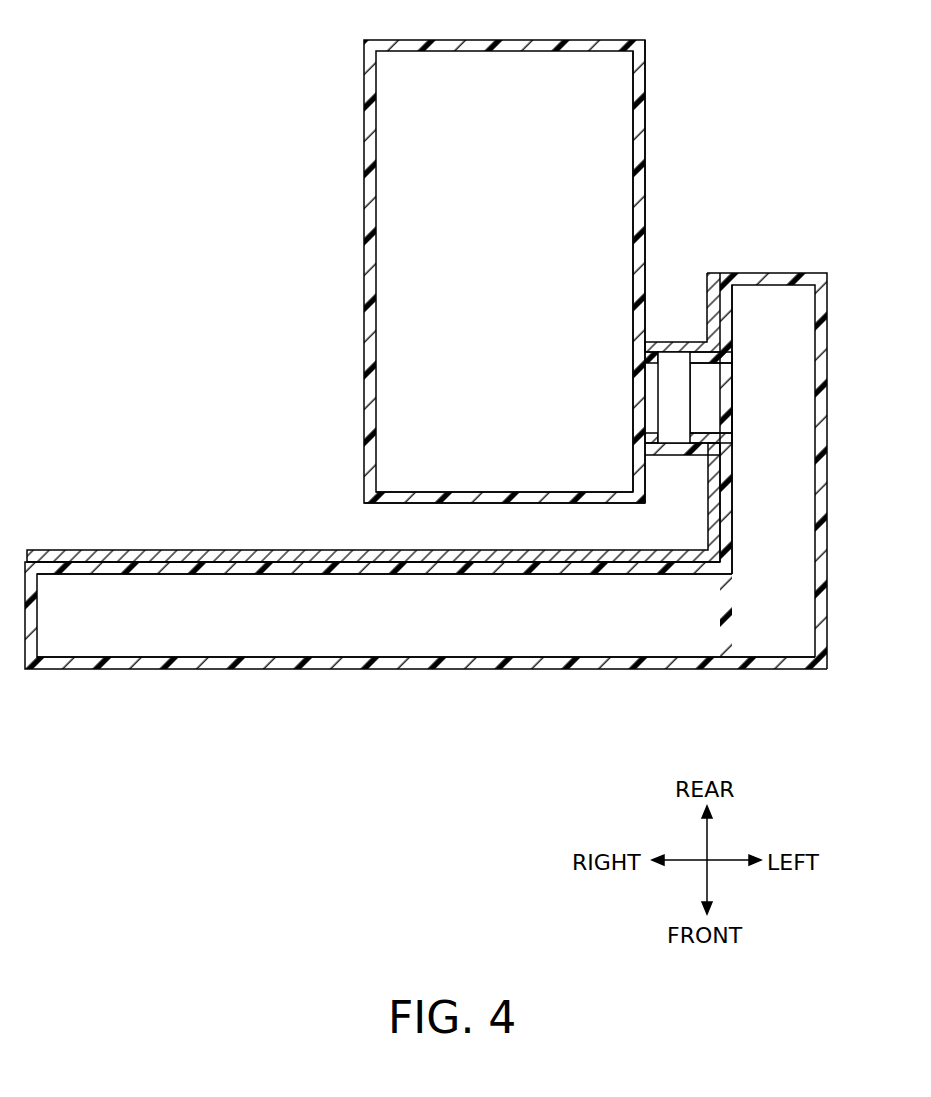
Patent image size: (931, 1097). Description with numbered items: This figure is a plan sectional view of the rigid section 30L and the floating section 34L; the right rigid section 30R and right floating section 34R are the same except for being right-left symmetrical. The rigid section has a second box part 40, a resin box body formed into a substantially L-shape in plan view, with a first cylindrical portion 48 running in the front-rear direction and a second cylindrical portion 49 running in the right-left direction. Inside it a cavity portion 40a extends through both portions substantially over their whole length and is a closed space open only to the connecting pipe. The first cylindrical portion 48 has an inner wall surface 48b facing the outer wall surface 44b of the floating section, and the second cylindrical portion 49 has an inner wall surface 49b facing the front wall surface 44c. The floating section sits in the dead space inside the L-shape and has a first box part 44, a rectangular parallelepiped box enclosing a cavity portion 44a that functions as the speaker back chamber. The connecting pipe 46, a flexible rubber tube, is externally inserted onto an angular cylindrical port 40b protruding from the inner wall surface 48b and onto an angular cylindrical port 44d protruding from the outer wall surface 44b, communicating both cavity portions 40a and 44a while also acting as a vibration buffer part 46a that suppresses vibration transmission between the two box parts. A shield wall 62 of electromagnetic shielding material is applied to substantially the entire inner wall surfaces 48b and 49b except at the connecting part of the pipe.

The left floating section 34L is at (355, 126).
The right floating section 34R is at (466, 290).
The first box part 44 is at (514, 290).
The cavity portion 44a is at (522, 255).
The outer wall surface 44b is at (646, 108).
The front wall surface 44c is at (416, 503).
The angular cylindrical port 44d is at (653, 436).
The connecting pipe 46 is at (688, 307).
The vibration buffer part 46a is at (665, 342).
The shield wall 62 is at (276, 556).
The second box part 40 is at (845, 720).
The cavity portion 40a is at (532, 628).
The angular cylindrical port 40b is at (703, 362).
The first cylindrical portion 48 is at (798, 497).
The inner wall surface 48b is at (698, 518).
The second cylindrical portion 49 is at (426, 611).
The inner wall surface 49b is at (182, 568).
The left rigid section 30L is at (270, 682).
The right rigid section 30R is at (465, 472).